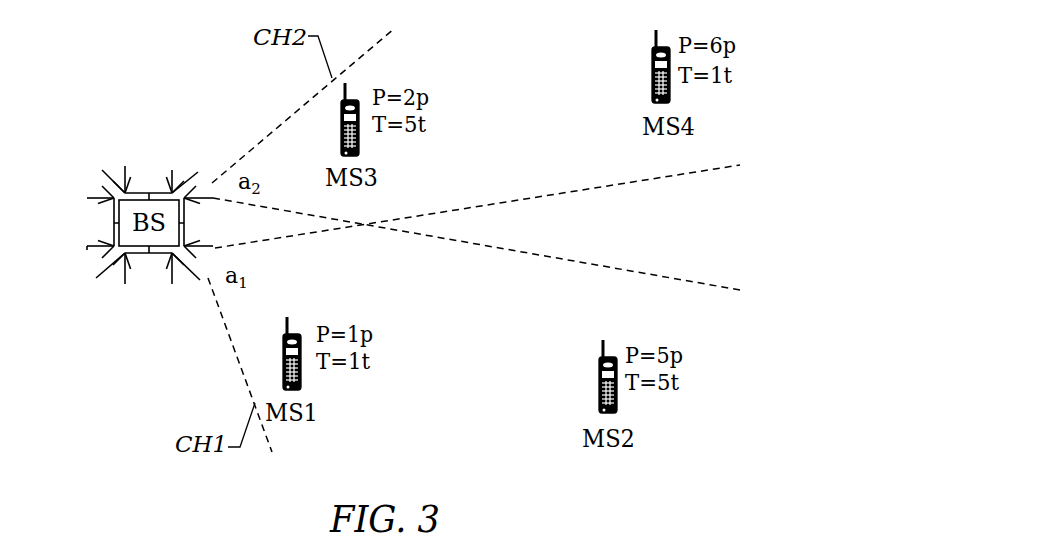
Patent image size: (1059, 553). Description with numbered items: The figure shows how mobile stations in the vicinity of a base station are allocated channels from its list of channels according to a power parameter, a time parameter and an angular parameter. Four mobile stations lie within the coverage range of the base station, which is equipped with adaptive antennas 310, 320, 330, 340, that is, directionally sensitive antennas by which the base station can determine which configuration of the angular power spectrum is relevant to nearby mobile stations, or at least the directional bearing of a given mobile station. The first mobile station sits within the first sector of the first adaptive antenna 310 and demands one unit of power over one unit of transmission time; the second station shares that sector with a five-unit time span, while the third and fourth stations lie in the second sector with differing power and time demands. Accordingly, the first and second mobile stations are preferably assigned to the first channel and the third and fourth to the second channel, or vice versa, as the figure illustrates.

The first adaptive antenna 310 is at (201, 185).
The adaptive antenna 320 is at (171, 168).
The adaptive antenna 330 is at (113, 273).
The adaptive antenna 340 is at (90, 258).